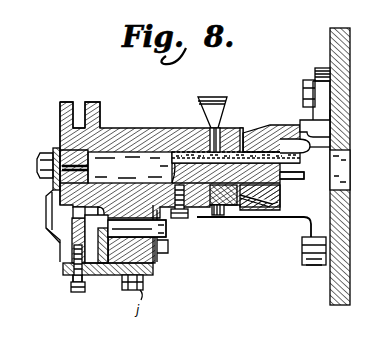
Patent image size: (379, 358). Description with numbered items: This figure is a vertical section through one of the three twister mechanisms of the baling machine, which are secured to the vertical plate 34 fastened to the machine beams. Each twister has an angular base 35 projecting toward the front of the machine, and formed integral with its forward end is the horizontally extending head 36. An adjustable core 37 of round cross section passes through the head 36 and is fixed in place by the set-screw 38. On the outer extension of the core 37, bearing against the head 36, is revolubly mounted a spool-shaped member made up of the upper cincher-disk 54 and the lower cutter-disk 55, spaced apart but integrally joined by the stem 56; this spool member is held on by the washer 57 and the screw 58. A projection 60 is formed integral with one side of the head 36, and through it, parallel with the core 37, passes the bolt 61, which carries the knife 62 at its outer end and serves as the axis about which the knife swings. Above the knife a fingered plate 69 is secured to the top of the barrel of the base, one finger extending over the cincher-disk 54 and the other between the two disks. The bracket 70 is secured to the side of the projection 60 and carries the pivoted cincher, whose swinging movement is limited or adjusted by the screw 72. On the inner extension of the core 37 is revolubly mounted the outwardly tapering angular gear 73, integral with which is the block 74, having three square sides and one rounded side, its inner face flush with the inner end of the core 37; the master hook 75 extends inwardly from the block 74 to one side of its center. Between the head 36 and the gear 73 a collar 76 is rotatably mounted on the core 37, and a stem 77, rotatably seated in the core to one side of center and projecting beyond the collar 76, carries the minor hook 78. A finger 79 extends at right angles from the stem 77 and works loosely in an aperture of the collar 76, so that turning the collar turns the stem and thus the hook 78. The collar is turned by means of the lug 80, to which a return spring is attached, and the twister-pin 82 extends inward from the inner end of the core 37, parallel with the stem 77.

The plate 34 is at (341, 305).
The angular base 35 is at (315, 72).
The head 36 is at (131, 128).
The core 37 is at (154, 152).
The set-screw 38 is at (186, 215).
The cincher-disk 54 is at (60, 117).
The cutter-disk 55 is at (98, 106).
The stem 56 is at (80, 120).
The washer 57 is at (52, 192).
The screw 58 is at (40, 172).
The projection 60 is at (157, 255).
The bolt 61 is at (160, 240).
The knife 62 is at (104, 270).
The guard 69 is at (50, 230).
The bracket 70 is at (152, 275).
The screw 72 is at (75, 293).
The angular gear 73 is at (253, 127).
The block 74 is at (277, 208).
The master hook 75 is at (338, 125).
The collar 76 is at (223, 219).
The stem 77 is at (190, 152).
The minor hook 78 is at (303, 147).
The finger 79 is at (219, 130).
The lug 80 is at (216, 99).
The twister-pin 82 is at (300, 180).